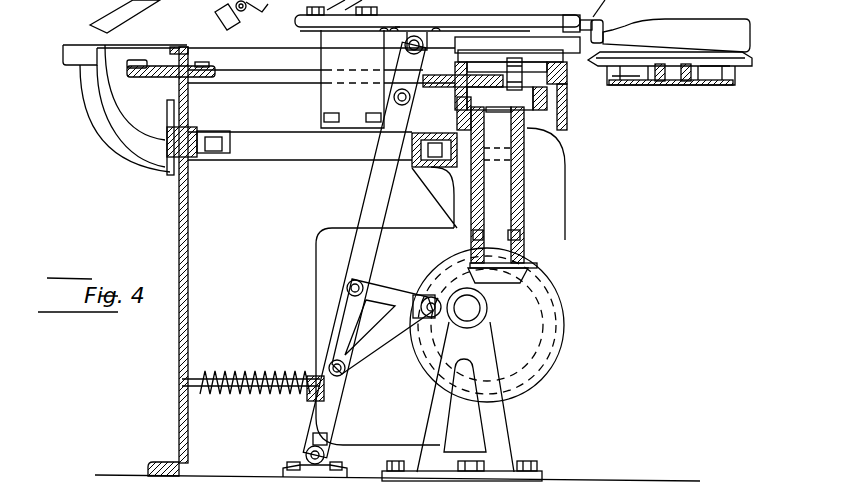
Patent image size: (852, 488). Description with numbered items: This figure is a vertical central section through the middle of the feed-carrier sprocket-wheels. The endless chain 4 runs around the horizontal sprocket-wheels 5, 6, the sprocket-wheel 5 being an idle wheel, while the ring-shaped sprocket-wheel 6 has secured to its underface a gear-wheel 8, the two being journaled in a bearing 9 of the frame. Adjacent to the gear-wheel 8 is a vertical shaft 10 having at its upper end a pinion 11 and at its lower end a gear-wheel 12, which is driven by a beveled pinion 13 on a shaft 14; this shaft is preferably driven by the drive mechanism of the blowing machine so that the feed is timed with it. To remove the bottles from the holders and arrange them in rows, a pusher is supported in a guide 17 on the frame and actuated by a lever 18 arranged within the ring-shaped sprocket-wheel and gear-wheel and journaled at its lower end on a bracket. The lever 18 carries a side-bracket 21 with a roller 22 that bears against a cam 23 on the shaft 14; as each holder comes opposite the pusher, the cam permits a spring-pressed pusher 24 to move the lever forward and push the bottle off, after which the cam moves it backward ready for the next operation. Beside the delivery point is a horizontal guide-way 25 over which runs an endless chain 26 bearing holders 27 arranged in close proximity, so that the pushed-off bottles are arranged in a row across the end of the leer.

The endless chain 4 is at (241, 18).
The sprocket-wheel 5 is at (525, 47).
The guide 17 is at (384, 15).
The sprocket-wheel 6 is at (140, 66).
The gear-wheel 8 is at (168, 128).
The bearing 9 is at (212, 155).
The vertical shaft 10 is at (497, 200).
The pinion 11 is at (566, 119).
The gear-wheel 12 is at (527, 275).
The beveled pinion 13 is at (513, 328).
The shaft 14 is at (471, 311).
The lever 18 is at (365, 191).
The side-bracket 21 is at (386, 287).
The roller 22 is at (431, 297).
The cam 23 is at (588, 330).
The spring-pressed pusher 24 is at (258, 378).
The horizontal guide-way 25 is at (662, 87).
The endless chain 26 is at (700, 85).
The holders 27 is at (718, 62).